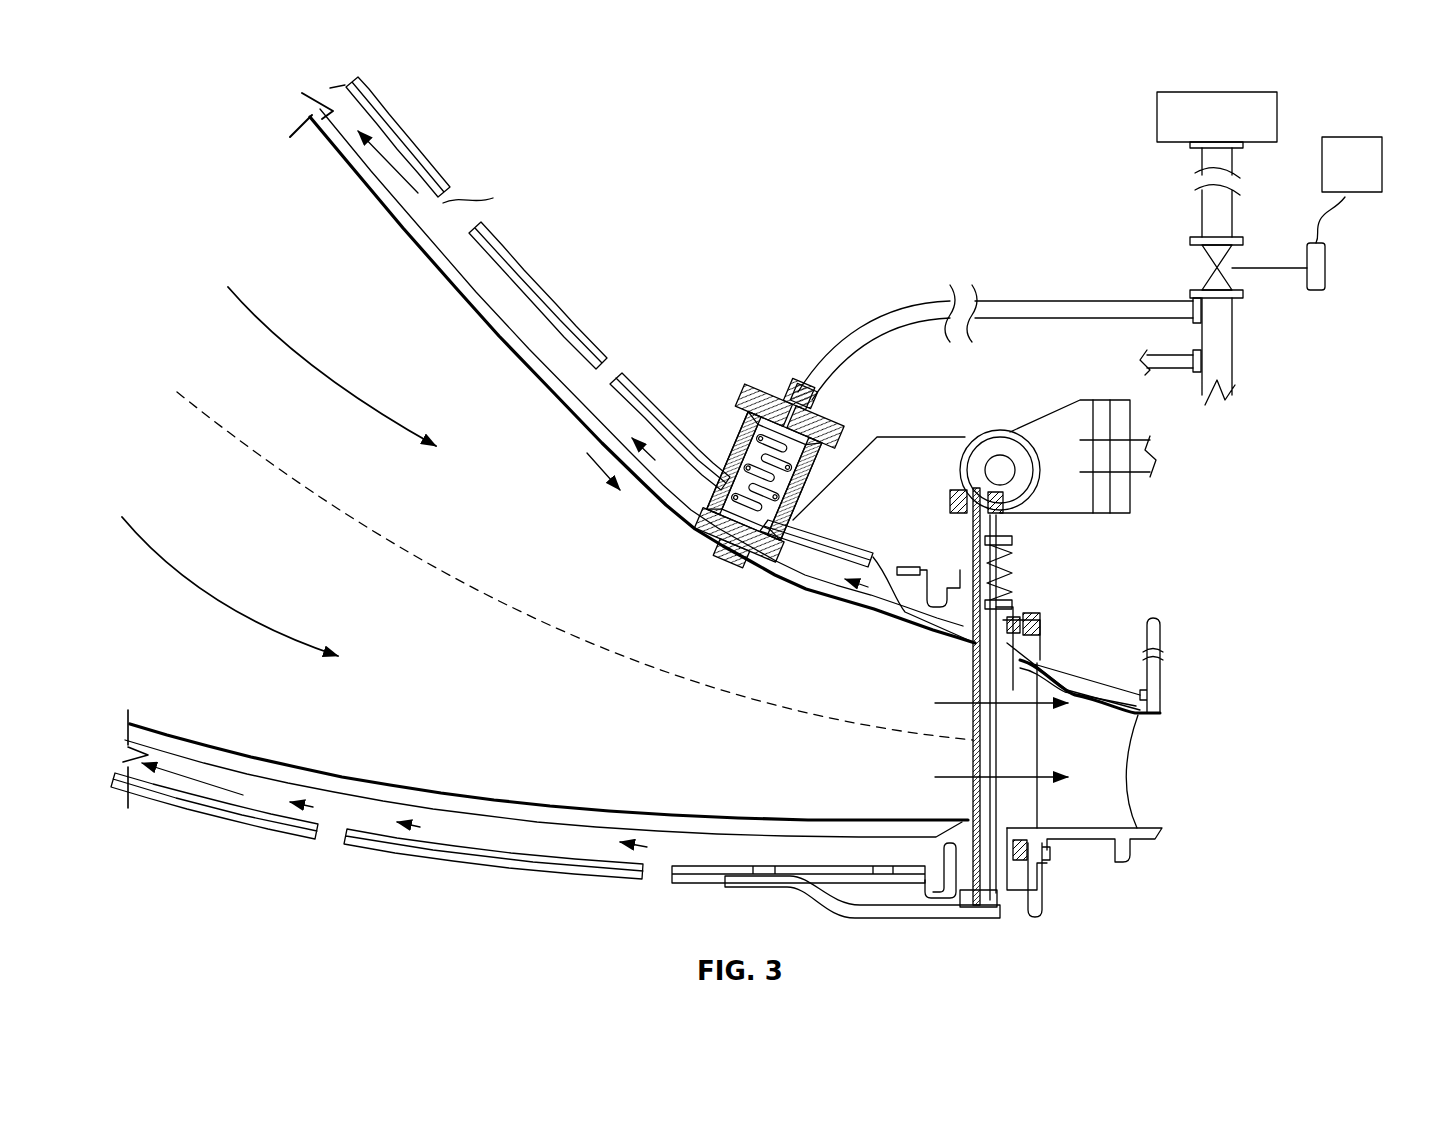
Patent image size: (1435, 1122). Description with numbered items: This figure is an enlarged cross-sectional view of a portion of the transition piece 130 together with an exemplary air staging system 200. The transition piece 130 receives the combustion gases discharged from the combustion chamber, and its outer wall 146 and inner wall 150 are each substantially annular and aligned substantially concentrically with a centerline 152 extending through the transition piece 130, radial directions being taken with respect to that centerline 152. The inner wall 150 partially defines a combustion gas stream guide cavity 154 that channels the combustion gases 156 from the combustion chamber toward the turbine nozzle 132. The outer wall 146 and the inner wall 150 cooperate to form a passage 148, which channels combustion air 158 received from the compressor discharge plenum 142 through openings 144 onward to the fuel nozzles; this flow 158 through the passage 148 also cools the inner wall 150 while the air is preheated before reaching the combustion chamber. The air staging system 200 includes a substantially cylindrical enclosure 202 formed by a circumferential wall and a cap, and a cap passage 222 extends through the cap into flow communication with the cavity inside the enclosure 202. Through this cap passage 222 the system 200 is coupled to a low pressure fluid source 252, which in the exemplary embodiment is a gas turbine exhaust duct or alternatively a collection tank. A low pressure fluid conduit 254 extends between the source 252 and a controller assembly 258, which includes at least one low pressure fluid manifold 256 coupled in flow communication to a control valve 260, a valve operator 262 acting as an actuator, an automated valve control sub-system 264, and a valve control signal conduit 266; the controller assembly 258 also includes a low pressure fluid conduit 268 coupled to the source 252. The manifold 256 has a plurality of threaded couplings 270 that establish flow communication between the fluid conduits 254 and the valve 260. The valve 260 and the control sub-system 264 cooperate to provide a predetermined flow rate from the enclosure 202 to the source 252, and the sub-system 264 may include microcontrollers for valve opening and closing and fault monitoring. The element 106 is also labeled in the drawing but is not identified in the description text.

The combustor mounting / high pressure turbine nozzle support 106 is at (1108, 626).
The transition piece 130 is at (497, 148).
The turbine nozzle 132 is at (1127, 803).
The compressor discharge plenum 142 is at (834, 144).
The openings 144 is at (440, 214).
The outer wall 146 is at (535, 278).
The passage 148 is at (368, 110).
The inner wall 150 is at (400, 238).
The centerline 152 is at (478, 575).
The combustion gas stream guide cavity 154 is at (624, 572).
The combustion gases 156 is at (280, 338).
The combustion air 158 is at (385, 160).
The air staging system 200 is at (790, 378).
The enclosure 202 is at (835, 428).
The cap passage 222 is at (760, 395).
The low pressure fluid source 252 is at (1238, 126).
The low pressure fluid conduit 254 is at (1160, 355).
The low pressure fluid manifold 256 is at (1232, 340).
The controller assembly 258 is at (1097, 186).
The control valve 260 is at (1202, 282).
The valve operator 262 is at (1325, 275).
The automated valve control sub-system 264 is at (1375, 176).
The valve control signal conduit 266 is at (1340, 222).
The low pressure fluid conduit 268 is at (1202, 215).
The threaded couplings 270 is at (1197, 148).